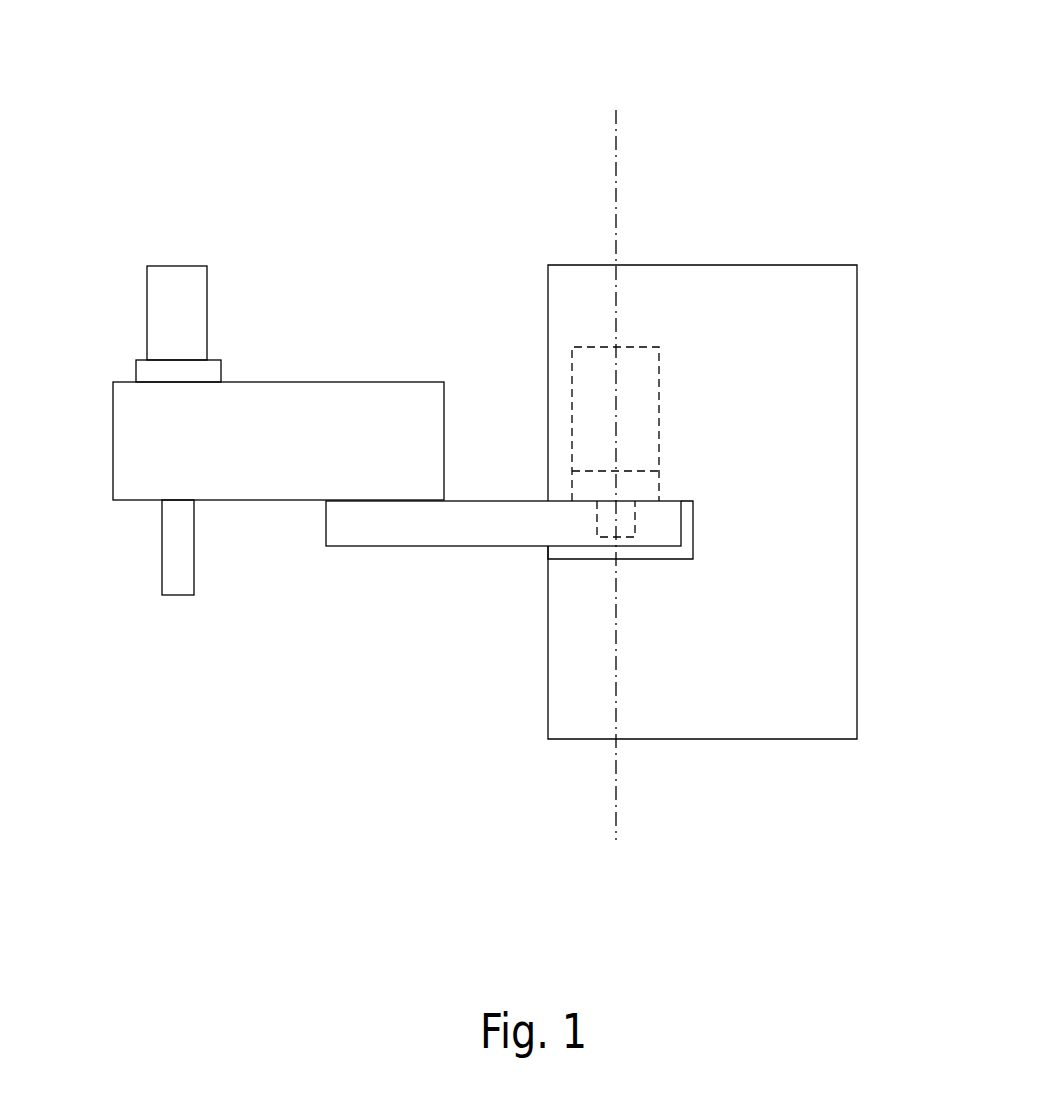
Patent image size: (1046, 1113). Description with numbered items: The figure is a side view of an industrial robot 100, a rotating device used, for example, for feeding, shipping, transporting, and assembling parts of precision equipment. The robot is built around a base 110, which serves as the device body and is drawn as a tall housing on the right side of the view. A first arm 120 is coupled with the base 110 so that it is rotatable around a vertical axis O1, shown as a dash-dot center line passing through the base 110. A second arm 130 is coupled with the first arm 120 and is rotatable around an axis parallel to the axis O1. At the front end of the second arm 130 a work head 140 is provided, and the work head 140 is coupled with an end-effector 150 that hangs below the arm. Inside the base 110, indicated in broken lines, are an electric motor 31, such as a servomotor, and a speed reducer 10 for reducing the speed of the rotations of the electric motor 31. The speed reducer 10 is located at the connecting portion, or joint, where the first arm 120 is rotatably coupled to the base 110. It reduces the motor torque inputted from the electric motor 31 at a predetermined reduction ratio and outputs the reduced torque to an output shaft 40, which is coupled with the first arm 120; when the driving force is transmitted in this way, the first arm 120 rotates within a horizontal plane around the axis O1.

The industrial robot 100 is at (501, 424).
The base 110 is at (857, 347).
The axis O1 is at (616, 150).
The electric motor 31 is at (659, 394).
The speed reducer 10 is at (678, 486).
The output shaft 40 is at (597, 517).
The first arm 120 is at (408, 547).
The second arm 130 is at (346, 382).
The work head 140 is at (135, 370).
The end-effector 150 is at (160, 543).